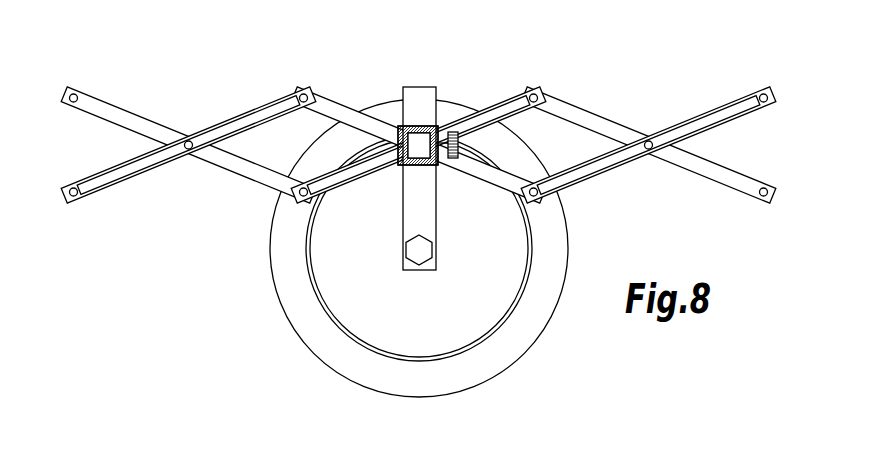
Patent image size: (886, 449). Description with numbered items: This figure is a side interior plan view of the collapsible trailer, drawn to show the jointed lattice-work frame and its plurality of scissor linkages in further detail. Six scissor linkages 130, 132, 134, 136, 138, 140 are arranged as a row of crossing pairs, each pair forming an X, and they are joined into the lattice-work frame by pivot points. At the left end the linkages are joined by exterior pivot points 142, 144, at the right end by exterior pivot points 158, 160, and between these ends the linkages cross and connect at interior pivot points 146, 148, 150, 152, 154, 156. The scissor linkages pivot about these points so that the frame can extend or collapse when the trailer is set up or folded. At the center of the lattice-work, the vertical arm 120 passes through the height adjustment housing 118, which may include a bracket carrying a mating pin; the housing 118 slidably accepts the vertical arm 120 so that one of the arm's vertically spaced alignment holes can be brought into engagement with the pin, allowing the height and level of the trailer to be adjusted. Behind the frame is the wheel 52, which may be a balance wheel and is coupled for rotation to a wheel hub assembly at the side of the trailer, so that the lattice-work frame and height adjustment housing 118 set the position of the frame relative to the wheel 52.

The wheel 52 is at (537, 342).
The height adjustment housing 118 is at (438, 126).
The vertical arm 120 is at (434, 260).
The scissor linkage 130 is at (123, 112).
The scissor linkage 132 is at (347, 180).
The scissor linkage 134 is at (592, 108).
The scissor linkage 136 is at (250, 108).
The scissor linkage 138 is at (493, 182).
The scissor linkage 140 is at (713, 108).
The exterior pivot point 142 is at (69, 87).
The exterior pivot point 144 is at (75, 199).
The interior pivot point 146 is at (188, 152).
The interior pivot point 148 is at (303, 88).
The interior pivot point 150 is at (282, 200).
The interior pivot point 152 is at (533, 88).
The interior pivot point 154 is at (541, 203).
The interior pivot point 156 is at (648, 153).
The exterior pivot point 158 is at (768, 86).
The exterior pivot point 160 is at (762, 199).